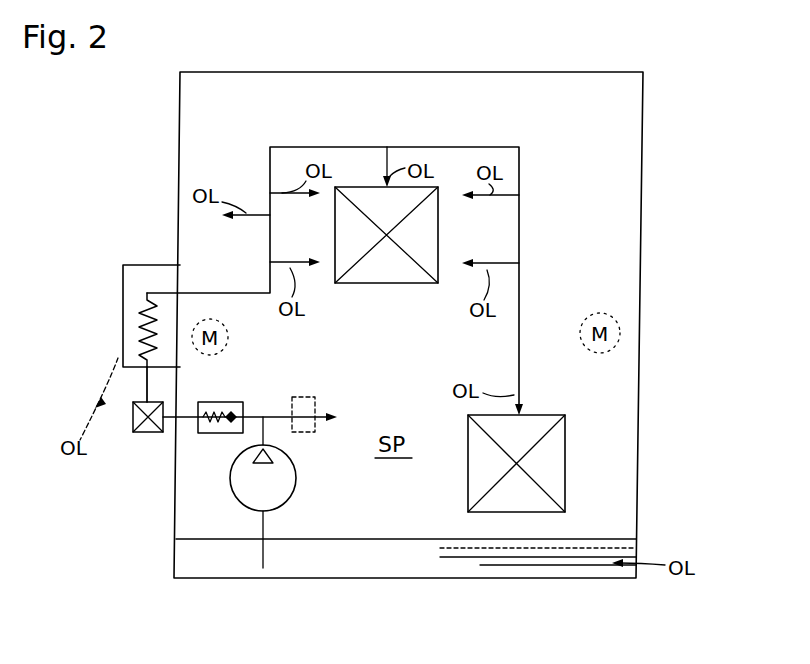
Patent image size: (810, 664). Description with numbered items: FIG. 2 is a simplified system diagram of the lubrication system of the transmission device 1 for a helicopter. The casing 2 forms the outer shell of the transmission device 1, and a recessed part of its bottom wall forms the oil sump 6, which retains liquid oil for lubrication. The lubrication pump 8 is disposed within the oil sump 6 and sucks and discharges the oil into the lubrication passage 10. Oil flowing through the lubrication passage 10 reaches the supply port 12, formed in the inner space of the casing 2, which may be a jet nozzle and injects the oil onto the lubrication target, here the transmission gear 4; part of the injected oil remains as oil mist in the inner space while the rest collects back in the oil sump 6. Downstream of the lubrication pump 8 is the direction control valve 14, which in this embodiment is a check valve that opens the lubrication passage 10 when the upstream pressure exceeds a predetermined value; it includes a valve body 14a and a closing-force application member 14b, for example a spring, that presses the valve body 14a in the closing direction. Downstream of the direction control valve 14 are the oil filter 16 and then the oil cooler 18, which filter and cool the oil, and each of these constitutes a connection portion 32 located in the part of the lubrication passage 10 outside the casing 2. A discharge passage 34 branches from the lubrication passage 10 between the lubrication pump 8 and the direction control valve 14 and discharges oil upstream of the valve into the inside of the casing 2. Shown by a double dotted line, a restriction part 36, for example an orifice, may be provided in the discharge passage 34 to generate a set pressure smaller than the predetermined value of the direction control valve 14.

The transmission device 1 is at (692, 155).
The casing 2 is at (645, 105).
The transmission gear 4 is at (386, 273).
The oil sump 6 is at (190, 558).
The lubrication pump 8 is at (296, 483).
The lubrication passage 10 is at (486, 147).
The supply port 12 is at (278, 190).
The direction control valve 14 is at (212, 446).
The valve body 14a is at (236, 436).
The closing-force application member 14b is at (211, 433).
The oil filter 16 is at (143, 433).
The oil cooler 18 is at (134, 334).
The connection portion 32 is at (106, 348).
The discharge passage 34 is at (326, 414).
The restriction part 36 is at (303, 397).